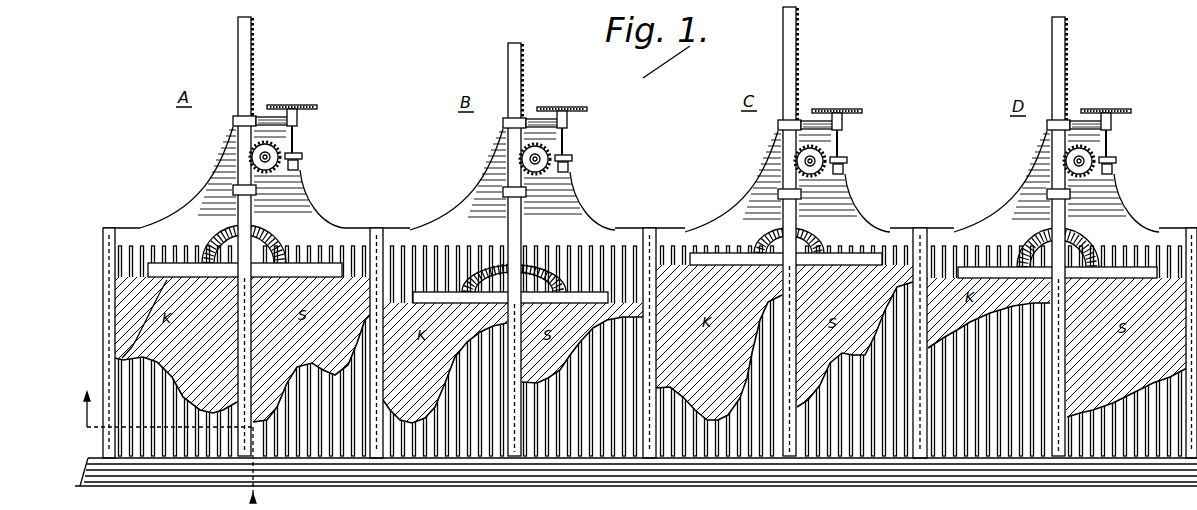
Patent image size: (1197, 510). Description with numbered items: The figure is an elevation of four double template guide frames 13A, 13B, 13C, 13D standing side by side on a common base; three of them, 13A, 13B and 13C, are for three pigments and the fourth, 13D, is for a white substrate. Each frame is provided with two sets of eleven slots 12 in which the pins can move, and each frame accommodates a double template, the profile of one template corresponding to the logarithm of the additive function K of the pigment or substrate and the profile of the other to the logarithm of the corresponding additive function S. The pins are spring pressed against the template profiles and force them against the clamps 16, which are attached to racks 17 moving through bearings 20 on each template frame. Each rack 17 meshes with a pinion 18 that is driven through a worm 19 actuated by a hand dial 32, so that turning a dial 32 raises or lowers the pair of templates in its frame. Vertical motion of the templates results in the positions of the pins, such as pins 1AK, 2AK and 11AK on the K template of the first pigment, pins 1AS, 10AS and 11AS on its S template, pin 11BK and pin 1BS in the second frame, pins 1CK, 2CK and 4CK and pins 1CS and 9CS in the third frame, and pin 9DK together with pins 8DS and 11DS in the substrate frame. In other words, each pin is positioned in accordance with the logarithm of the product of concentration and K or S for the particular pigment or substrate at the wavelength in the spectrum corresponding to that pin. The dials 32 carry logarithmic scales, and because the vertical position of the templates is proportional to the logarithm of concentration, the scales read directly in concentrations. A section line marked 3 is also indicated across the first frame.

The section line 3- 3 is at (165, 435).
The slots 12 is at (152, 247).
The double template guide frame for pigment A 13A is at (348, 230).
The double template guide frame for pigment B 13B is at (617, 232).
The double template guide frame for pigment C 13C is at (882, 234).
The double template guide frame for substrate D 13D is at (1162, 232).
The clamps 16 is at (276, 230).
The racks 17 is at (254, 37).
The pinion 18 is at (278, 148).
The worm 19 is at (303, 155).
The bearings 20 is at (241, 188).
The hand dial 32 is at (308, 105).
The pin for K curve of pigment A 1AK is at (115, 358).
The pin for K curve of pigment A 2AK is at (155, 319).
The pin for K curve of pigment A 11AK is at (214, 387).
The pin for S curve of pigment A 1AS is at (277, 387).
The pin for S curve of pigment A 10AS is at (353, 355).
The pin for S curve of pigment A 11AS is at (365, 320).
The pin for K curve of pigment B 11BK is at (503, 323).
The pin for S curve of pigment B 1BS is at (526, 381).
The pin for K curve of pigment C 1CK is at (660, 387).
The pin for K curve of pigment C 2CK is at (678, 388).
The pin for K curve of pigment C 4CK is at (693, 418).
The pin for S curve of pigment C 1CS is at (798, 407).
The pin for S curve of pigment C 9CS is at (880, 311).
The pin for K curve of substrate D 9DK is at (1018, 303).
The pin for S curve of substrate D 8DS is at (1148, 388).
The pin for S curve of substrate D 11DS is at (1180, 372).